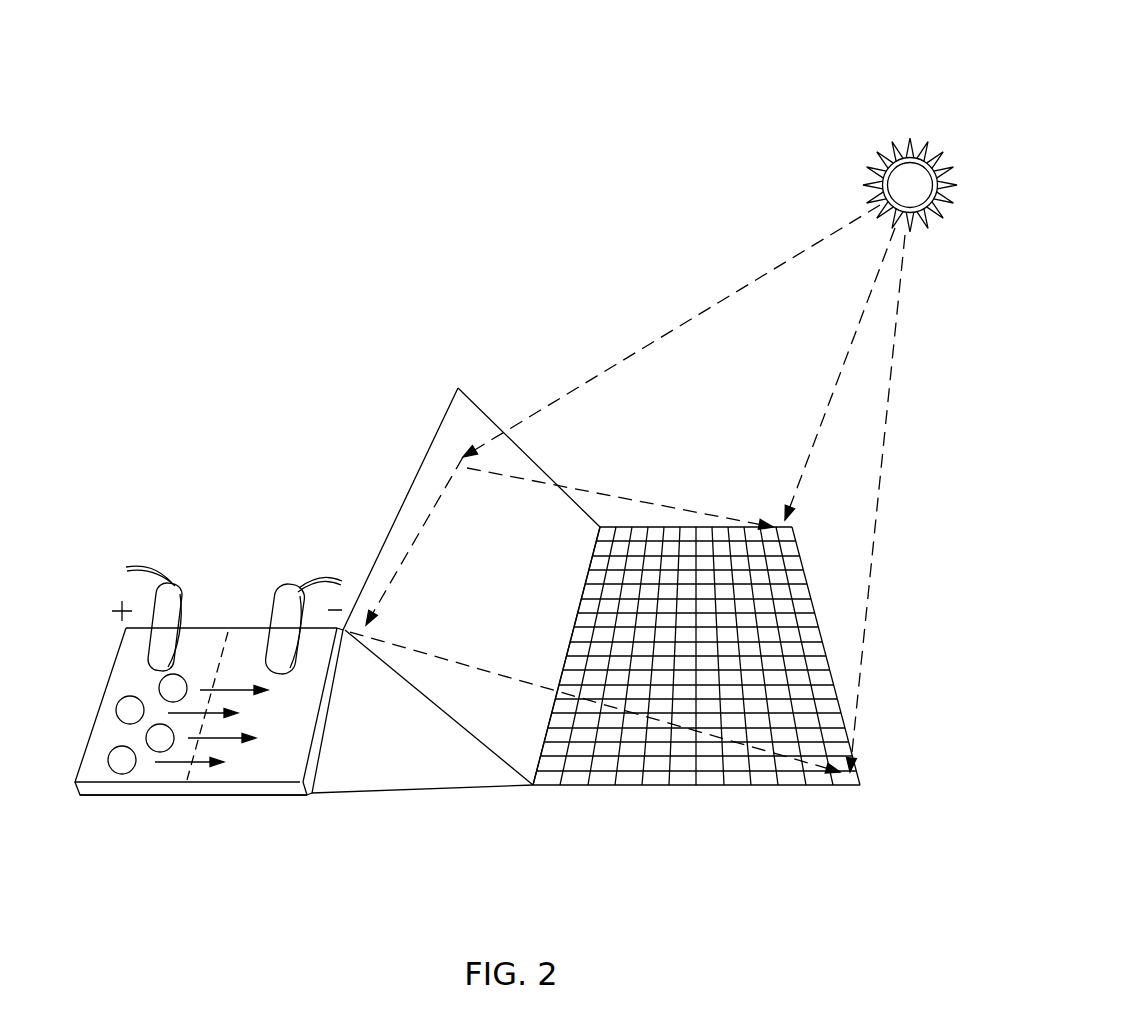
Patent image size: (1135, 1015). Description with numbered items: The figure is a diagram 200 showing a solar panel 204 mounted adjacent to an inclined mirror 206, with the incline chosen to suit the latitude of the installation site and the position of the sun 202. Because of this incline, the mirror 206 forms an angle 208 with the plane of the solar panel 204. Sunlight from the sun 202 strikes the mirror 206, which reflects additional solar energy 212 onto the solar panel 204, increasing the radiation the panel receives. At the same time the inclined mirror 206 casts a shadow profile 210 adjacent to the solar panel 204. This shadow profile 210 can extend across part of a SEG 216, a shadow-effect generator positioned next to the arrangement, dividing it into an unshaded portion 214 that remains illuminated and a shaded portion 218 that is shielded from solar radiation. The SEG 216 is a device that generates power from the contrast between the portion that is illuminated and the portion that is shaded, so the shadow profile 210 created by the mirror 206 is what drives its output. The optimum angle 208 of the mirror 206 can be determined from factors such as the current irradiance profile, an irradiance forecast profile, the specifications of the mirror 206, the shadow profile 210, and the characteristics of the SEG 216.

The diagram 200 is at (828, 50).
The sun 202 is at (917, 177).
The solar panel 204 is at (800, 786).
The inclined mirror 206 is at (437, 432).
The angle 208 is at (476, 738).
The shadow profile 210 is at (287, 742).
The additional solar energy 212 is at (527, 738).
The unshaded portion 214 is at (103, 744).
The SEG 216 is at (214, 628).
The shaded portion 218 is at (238, 765).